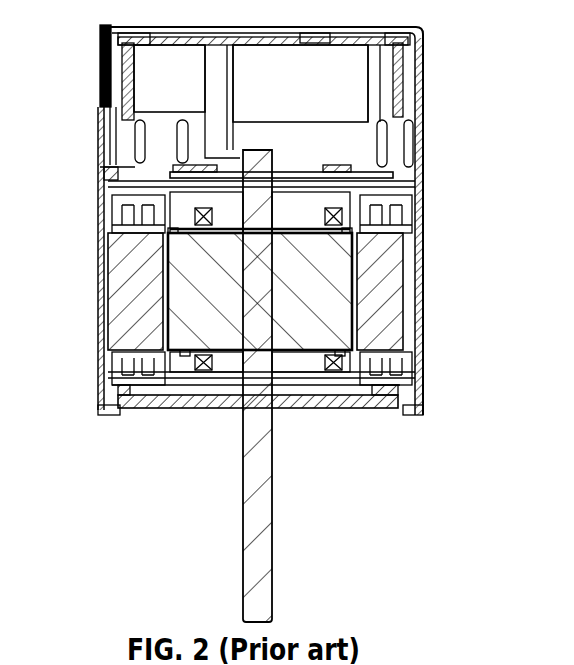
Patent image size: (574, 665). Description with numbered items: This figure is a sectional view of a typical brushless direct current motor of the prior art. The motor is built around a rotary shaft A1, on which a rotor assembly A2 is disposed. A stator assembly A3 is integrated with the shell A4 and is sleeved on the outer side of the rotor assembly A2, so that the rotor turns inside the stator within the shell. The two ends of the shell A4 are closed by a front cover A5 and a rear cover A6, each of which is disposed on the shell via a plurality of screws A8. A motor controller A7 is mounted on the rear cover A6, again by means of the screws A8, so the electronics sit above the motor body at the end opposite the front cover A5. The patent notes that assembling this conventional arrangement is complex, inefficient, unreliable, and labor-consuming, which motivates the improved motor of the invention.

The rotary shaft A1 is at (257, 517).
The rotor assembly A2 is at (205, 293).
The stator assembly A3 is at (142, 250).
The shell A4 is at (417, 307).
The front cover A5 is at (343, 402).
The rear cover A6 is at (337, 204).
The motor controller A7 is at (175, 85).
The screws A8 is at (112, 373).